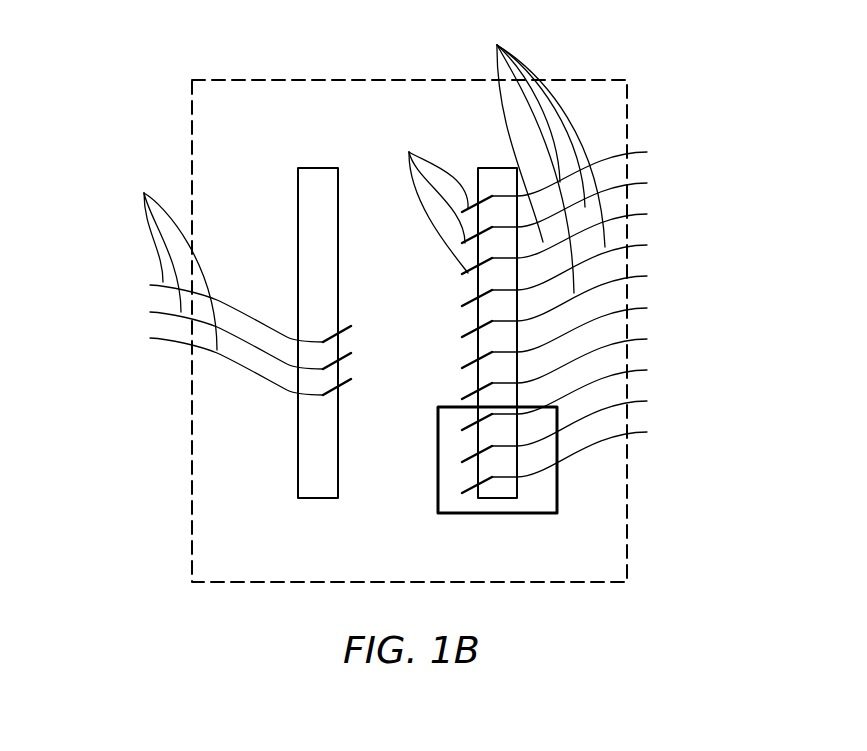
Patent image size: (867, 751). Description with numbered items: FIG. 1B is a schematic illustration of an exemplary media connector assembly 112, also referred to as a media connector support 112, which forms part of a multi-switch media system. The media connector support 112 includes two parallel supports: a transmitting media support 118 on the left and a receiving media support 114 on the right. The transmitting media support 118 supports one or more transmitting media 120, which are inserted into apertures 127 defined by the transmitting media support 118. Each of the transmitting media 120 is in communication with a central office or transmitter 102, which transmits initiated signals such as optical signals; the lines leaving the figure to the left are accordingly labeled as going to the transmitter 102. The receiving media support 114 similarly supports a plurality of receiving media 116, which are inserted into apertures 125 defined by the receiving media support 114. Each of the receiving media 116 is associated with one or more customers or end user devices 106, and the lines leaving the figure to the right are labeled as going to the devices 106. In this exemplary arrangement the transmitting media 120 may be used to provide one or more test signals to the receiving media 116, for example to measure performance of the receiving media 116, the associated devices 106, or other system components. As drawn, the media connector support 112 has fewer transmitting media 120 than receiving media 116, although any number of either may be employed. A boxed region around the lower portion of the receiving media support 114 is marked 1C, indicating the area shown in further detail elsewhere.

The device region (dashed boundary) 112 is at (627, 100).
The second electrode bar 114 is at (497, 500).
The conductive lines 116 is at (544, 155).
The first electrode bar 118 is at (318, 499).
The conductive lines 120 is at (172, 260).
The connection points 125 is at (431, 200).
The connection points 127 is at (333, 362).
The lines to component 102 is at (146, 282).
The lines to component 106 is at (658, 150).
The region shown in FIG. 1C is at (557, 488).